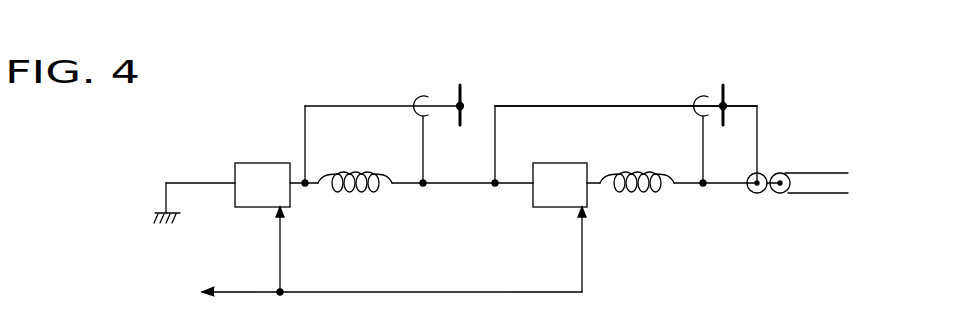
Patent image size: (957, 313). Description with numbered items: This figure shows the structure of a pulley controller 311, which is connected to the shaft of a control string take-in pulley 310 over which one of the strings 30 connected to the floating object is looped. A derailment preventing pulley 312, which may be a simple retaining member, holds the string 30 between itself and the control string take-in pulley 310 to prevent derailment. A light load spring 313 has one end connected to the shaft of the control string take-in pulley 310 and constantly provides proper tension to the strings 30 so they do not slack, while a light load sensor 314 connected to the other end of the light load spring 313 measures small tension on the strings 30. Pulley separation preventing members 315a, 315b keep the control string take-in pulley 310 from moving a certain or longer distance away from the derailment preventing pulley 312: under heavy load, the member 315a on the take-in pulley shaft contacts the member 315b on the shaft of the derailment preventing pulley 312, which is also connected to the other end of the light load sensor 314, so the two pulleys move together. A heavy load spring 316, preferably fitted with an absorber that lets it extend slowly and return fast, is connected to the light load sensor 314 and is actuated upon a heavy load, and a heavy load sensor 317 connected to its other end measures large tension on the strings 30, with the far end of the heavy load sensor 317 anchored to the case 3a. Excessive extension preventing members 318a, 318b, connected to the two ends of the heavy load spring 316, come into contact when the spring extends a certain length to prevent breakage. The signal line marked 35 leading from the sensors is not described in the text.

The case 3a is at (159, 203).
The strings 30 is at (832, 173).
The control signal output 35 is at (193, 291).
The control string take-in pulley 310 is at (783, 173).
The pulley controller 311 is at (641, 88).
The derailment preventing pulley 312 is at (752, 193).
The light load spring 313 is at (642, 193).
The light load sensor 314 is at (565, 192).
The pulley separation preventing member 315a is at (708, 95).
The pulley separation preventing member 315b is at (728, 95).
The heavy load spring 316 is at (360, 195).
The heavy load sensor 317 is at (267, 192).
The excessive extension preventing member 318a is at (414, 99).
The excessive extension preventing member 318b is at (462, 90).